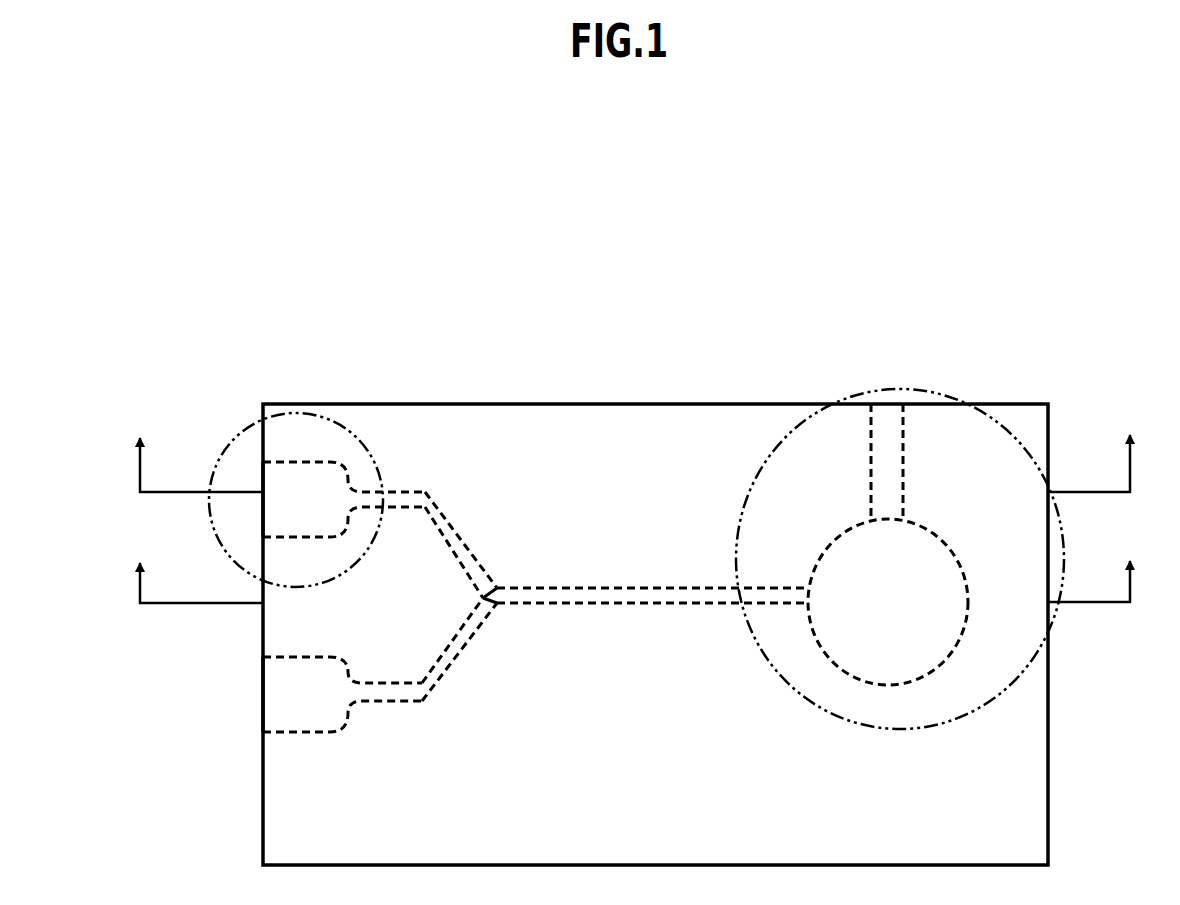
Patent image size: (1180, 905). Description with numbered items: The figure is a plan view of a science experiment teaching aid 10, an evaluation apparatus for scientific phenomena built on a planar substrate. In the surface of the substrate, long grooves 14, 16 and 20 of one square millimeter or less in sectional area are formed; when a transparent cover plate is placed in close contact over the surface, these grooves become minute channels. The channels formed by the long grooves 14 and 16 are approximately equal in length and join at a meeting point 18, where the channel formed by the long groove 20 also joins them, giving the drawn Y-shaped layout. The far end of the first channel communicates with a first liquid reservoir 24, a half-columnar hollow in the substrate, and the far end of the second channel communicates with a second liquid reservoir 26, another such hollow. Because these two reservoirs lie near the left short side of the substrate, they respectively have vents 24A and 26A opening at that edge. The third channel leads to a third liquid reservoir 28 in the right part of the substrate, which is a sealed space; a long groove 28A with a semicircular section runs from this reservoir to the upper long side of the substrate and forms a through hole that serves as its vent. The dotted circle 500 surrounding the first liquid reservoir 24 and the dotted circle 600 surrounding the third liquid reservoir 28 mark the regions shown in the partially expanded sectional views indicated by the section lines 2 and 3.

The science experiment teaching aid 10 is at (630, 362).
The long groove 14 is at (453, 530).
The long groove 16 is at (430, 703).
The meeting point 18 is at (493, 610).
The long groove 20 is at (648, 605).
The first liquid reservoir 24 is at (292, 475).
The vent 24A is at (263, 472).
The second liquid reservoir 26 is at (296, 717).
The vent 26A is at (263, 695).
The third liquid reservoir 28 is at (878, 688).
The long groove 28A is at (885, 420).
The section line 2- 2 is at (627, 433).
The section line 3- 3 is at (627, 558).
The dotted circle region 500 is at (210, 517).
The dotted circle region 600 is at (868, 392).